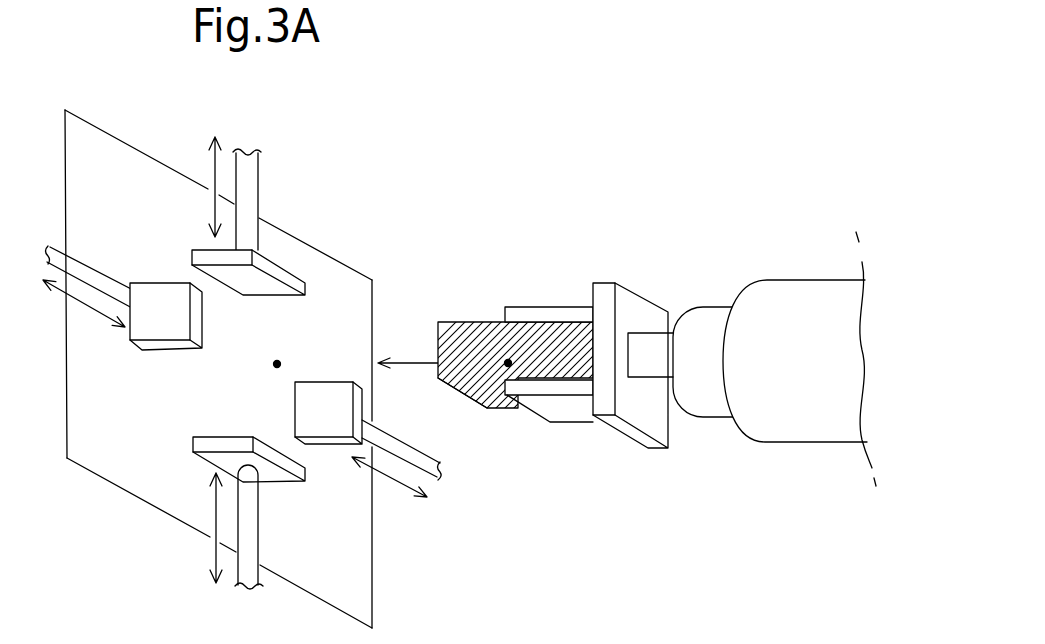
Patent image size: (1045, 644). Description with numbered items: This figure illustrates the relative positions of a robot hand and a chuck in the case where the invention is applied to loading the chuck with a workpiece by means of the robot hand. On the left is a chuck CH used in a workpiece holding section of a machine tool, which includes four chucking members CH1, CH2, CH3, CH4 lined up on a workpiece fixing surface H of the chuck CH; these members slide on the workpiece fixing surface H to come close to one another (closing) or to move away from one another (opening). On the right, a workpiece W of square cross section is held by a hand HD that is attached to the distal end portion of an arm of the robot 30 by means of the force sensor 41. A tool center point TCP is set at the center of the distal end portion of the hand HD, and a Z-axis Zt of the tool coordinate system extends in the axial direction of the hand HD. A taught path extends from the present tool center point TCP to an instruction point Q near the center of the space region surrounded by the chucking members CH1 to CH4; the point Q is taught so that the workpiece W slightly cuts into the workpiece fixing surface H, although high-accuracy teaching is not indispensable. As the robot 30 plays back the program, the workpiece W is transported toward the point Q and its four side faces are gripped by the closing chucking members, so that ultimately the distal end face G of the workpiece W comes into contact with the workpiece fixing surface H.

The chuck CH is at (334, 148).
The chucking member CH1 is at (275, 258).
The chucking member CH2 is at (155, 282).
The chucking member CH3 is at (262, 497).
The chucking member CH4 is at (330, 450).
The workpiece fixing surface H is at (300, 332).
The instruction point Q is at (277, 364).
The Z-axis of the tool coordinate system Zt is at (443, 350).
The workpiece W is at (470, 330).
The tool center point TCP is at (508, 363).
The distal end face G is at (452, 392).
The hand HD is at (565, 310).
The force sensor 41 is at (708, 317).
The robot 30 is at (782, 290).